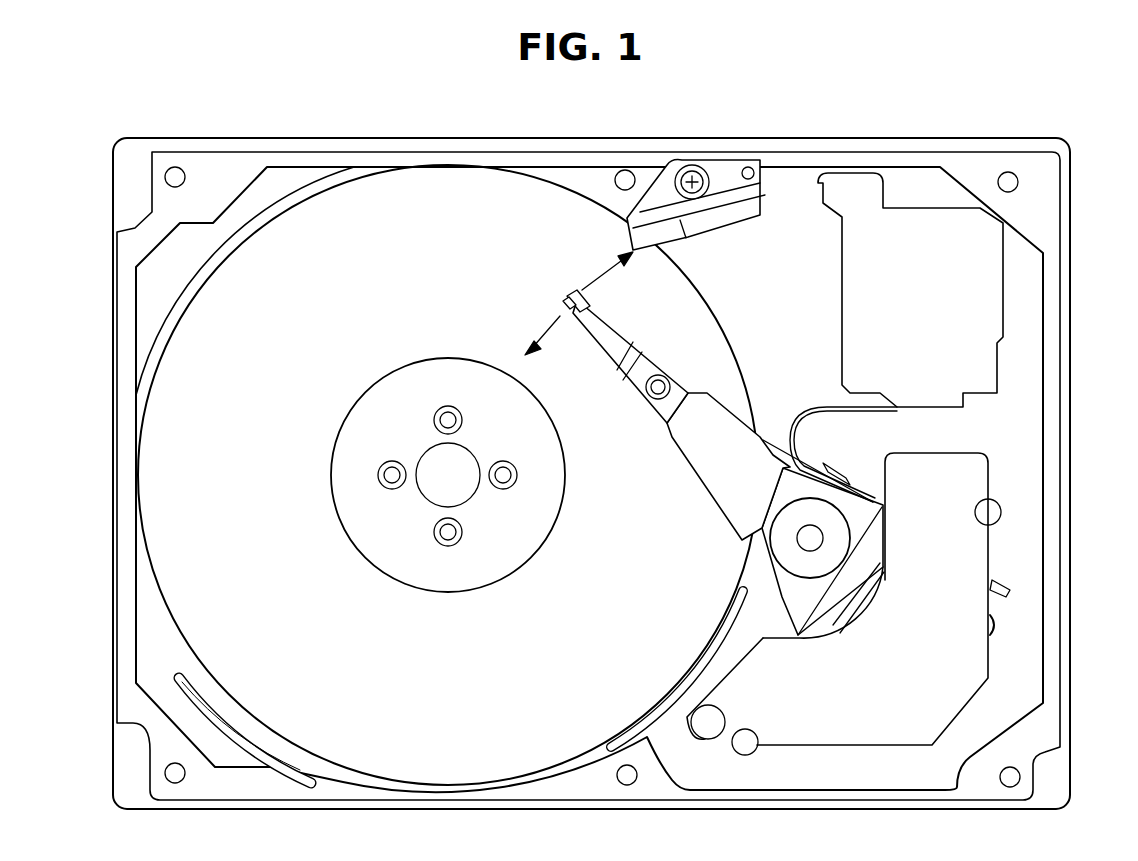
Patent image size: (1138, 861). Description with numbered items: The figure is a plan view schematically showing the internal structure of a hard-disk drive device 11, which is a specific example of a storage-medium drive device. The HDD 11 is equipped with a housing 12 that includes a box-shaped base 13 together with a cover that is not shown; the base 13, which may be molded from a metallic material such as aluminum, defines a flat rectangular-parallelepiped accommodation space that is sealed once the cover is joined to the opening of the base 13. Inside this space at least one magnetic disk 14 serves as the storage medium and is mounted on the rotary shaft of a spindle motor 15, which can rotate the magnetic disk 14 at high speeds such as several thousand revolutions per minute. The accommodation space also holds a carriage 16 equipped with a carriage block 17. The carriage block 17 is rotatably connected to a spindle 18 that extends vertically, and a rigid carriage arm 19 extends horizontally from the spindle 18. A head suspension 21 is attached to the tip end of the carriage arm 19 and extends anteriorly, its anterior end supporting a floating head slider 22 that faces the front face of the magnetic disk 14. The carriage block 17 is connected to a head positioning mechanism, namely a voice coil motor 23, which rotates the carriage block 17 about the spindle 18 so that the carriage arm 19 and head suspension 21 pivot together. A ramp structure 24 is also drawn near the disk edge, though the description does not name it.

The hard-disk drive device 11 is at (323, 100).
The housing 12 is at (112, 206).
The base 13 is at (113, 318).
The magnetic disk 14 is at (148, 412).
The spindle motor 15 is at (432, 450).
The carriage 16 is at (723, 397).
The carriage block 17 is at (740, 594).
The spindle 18 is at (848, 522).
The carriage arm 19 is at (713, 497).
The head suspension 21 is at (640, 395).
The floating head slider 22 is at (583, 300).
The voice coil motor 23 is at (1000, 630).
The ramp 24 is at (696, 205).